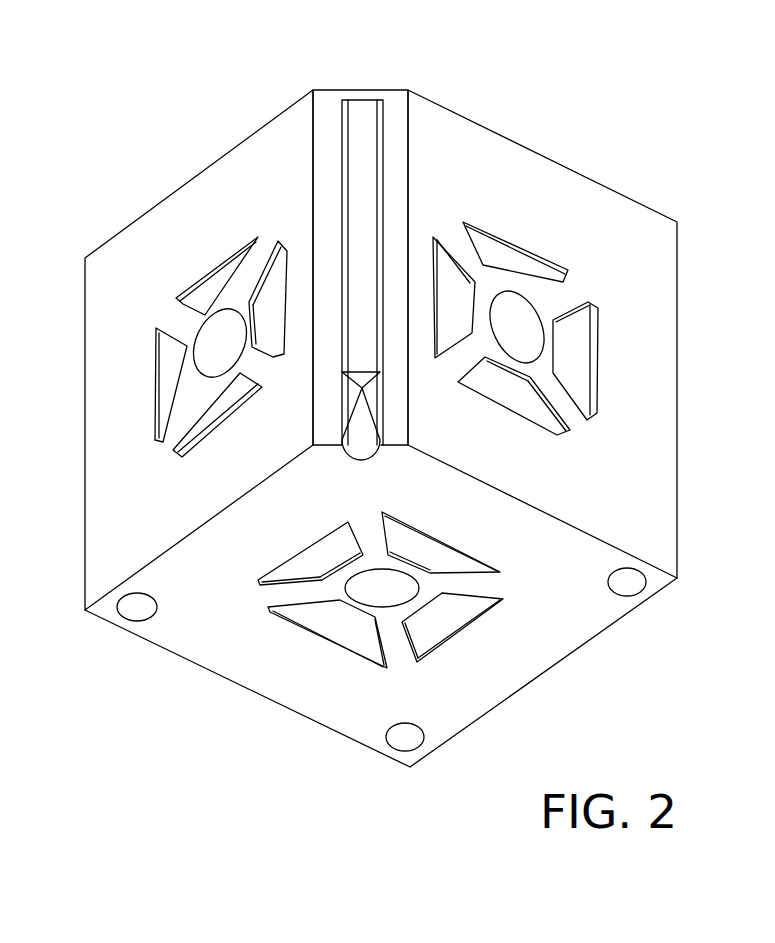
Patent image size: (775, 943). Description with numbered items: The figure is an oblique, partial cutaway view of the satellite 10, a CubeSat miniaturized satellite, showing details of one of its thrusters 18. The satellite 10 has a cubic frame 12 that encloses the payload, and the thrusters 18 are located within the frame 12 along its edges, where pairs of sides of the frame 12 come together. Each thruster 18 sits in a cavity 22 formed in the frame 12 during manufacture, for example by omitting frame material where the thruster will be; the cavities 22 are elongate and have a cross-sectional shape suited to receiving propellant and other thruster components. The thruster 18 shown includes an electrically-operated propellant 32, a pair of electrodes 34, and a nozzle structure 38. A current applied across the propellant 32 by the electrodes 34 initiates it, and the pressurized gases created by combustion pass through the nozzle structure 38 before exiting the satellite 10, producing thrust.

The satellite 10 is at (62, 289).
The cubic frame 12 is at (184, 307).
The thrusters 18 is at (403, 100).
The cavities 22 is at (325, 105).
The electrically-operated propellant 32 is at (363, 120).
The pair of electrodes 34 is at (342, 167).
The nozzle structure 38 is at (372, 398).